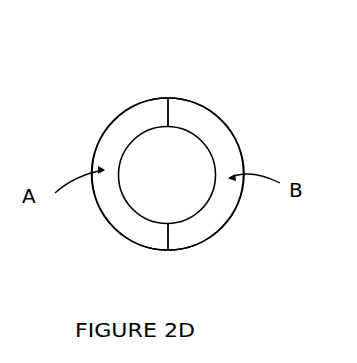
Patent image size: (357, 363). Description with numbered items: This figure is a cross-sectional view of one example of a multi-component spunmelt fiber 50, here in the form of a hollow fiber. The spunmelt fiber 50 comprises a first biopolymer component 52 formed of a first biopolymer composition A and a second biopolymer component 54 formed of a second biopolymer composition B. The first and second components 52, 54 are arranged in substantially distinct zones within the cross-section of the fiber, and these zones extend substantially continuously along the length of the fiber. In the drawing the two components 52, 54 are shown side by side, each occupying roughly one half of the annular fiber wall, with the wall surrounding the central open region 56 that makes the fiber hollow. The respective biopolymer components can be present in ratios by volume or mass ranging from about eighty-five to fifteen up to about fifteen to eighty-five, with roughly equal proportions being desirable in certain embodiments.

The spunmelt fiber 50 is at (203, 75).
The first biopolymer component 52 is at (112, 123).
The second biopolymer component 54 is at (233, 133).
The inner lumen 56 is at (157, 193).